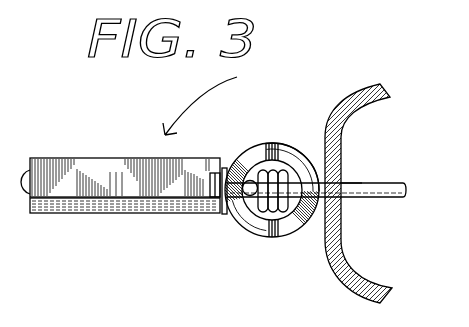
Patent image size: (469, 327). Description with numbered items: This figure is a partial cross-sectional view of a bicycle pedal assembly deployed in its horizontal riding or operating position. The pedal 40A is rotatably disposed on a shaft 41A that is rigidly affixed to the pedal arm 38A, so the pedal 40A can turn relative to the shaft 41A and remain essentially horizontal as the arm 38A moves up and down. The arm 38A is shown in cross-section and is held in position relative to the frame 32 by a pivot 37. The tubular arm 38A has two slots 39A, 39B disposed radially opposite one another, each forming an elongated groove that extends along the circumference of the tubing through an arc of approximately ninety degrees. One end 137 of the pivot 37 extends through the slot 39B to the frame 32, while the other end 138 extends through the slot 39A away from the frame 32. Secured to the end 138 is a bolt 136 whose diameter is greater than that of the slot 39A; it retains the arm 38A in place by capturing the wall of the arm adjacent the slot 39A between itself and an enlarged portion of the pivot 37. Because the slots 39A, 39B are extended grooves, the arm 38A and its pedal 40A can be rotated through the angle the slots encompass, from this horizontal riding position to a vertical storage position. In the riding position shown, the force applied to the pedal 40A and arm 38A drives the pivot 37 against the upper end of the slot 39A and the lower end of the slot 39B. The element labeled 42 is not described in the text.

The frame 32 is at (355, 96).
The pivot 37 is at (405, 191).
The end of pivot 137 is at (347, 183).
The pedal arm 38A is at (292, 237).
The slot 39A is at (250, 225).
The slot 39B is at (313, 125).
The pedal 40A is at (87, 212).
The shaft 41A is at (24, 166).
The spring 42 is at (262, 143).
The bolt 136 is at (224, 168).
The end of pivot 138 is at (209, 188).